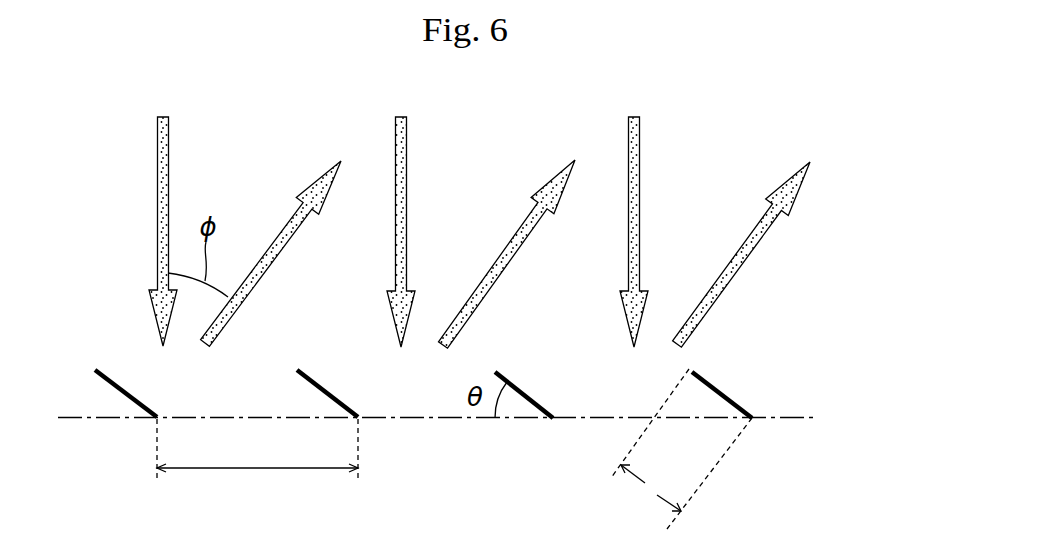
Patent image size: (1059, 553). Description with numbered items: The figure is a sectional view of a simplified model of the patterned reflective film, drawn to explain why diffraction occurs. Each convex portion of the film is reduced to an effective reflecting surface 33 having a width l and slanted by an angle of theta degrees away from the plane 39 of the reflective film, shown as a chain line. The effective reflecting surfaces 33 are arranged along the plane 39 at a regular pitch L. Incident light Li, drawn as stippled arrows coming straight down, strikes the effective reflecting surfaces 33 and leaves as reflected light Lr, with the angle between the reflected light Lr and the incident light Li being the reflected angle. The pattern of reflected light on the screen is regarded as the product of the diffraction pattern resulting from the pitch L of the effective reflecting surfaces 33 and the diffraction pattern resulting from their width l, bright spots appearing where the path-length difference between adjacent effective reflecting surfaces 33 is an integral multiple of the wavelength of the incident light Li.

The effective reflecting surface 33 is at (725, 393).
The plane of the reflective film 39 is at (807, 418).
The incident light Li is at (163, 214).
The reflected light Lr is at (275, 238).
The pitch of the effective reflecting surfaces L is at (257, 460).
The width of the effective reflecting surface l is at (681, 449).